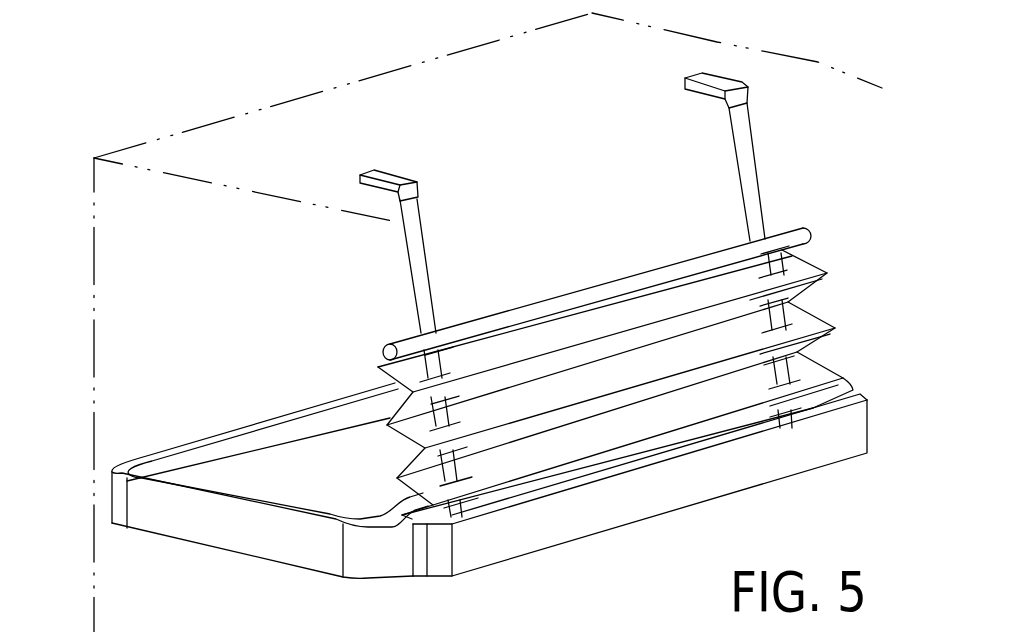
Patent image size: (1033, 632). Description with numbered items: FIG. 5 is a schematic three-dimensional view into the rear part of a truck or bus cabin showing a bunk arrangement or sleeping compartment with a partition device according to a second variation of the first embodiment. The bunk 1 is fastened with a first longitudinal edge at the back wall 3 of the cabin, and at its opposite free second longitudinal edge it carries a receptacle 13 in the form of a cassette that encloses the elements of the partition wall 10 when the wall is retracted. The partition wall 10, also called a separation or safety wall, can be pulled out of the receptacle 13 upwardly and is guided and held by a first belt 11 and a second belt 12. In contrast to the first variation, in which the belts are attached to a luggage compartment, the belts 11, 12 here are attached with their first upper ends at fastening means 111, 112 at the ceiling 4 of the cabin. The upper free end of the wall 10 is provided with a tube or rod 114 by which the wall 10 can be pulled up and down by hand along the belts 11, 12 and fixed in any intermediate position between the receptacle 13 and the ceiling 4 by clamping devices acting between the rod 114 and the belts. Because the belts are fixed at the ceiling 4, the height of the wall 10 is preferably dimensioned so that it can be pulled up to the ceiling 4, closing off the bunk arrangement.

The bunk 1 is at (282, 485).
The back wall 3 is at (143, 315).
The ceiling 4 is at (776, 50).
The partition wall 10 is at (377, 468).
The first belt 11 is at (413, 288).
The second belt 12 is at (752, 192).
The receptacle 13 is at (600, 523).
The fastening means 111 is at (388, 176).
The fastening means 112 is at (702, 92).
The tube or rod 114 is at (403, 337).